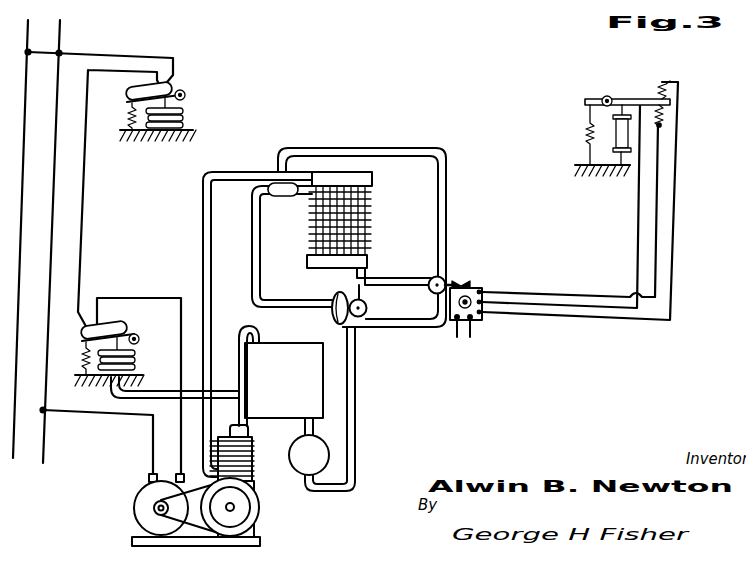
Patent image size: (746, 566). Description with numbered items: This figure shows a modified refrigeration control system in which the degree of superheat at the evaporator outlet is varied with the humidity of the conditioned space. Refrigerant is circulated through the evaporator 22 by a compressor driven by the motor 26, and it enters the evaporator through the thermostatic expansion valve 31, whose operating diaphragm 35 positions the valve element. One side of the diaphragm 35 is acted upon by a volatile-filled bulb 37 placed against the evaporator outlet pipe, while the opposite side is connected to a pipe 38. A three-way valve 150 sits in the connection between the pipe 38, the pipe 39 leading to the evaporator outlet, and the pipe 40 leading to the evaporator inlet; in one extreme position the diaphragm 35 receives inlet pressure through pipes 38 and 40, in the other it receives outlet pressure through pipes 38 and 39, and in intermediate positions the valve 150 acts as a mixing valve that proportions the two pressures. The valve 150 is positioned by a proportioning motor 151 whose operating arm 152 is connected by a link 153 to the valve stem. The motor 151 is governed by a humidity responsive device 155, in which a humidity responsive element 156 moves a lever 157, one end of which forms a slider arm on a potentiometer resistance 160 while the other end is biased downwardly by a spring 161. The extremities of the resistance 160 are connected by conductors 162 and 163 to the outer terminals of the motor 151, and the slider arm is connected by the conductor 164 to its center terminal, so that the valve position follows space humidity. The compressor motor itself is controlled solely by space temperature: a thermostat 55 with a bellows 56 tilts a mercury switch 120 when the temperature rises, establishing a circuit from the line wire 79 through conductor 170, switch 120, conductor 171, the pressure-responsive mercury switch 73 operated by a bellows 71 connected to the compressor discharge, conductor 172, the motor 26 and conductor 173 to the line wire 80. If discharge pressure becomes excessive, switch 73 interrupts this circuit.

The evaporator 22 is at (369, 222).
The motor 26 is at (138, 506).
The expansion valve 31 is at (363, 307).
The operating diaphragm 35 is at (332, 315).
The bulb 37 is at (289, 197).
The pipe 38 is at (408, 327).
The pipe 39 is at (445, 263).
The pipe 40 is at (406, 286).
The thermostat 55 is at (180, 105).
The bellows 56 is at (180, 112).
The bellows 71 is at (134, 370).
The mercury switch 73 is at (119, 330).
The line wire 79 is at (30, 31).
The line wire 80 is at (44, 450).
The mercury switch 120 is at (166, 95).
The three-way valve 150 is at (441, 281).
The motor 151 is at (483, 289).
The operating arm 152 is at (470, 284).
The link 153 is at (454, 323).
The humidity responsive device 155 is at (596, 139).
The humidity responsive element 156 is at (617, 141).
The lever 157 is at (625, 99).
The potentiometer resistance 160 is at (665, 82).
The spring 161 is at (588, 136).
The conductor 162 is at (569, 297).
The conductor 163 is at (585, 321).
The conductor 164 is at (655, 227).
The conductor 170 is at (97, 53).
The conductor 171 is at (84, 227).
The conductor 172 is at (181, 347).
The conductor 173 is at (88, 416).